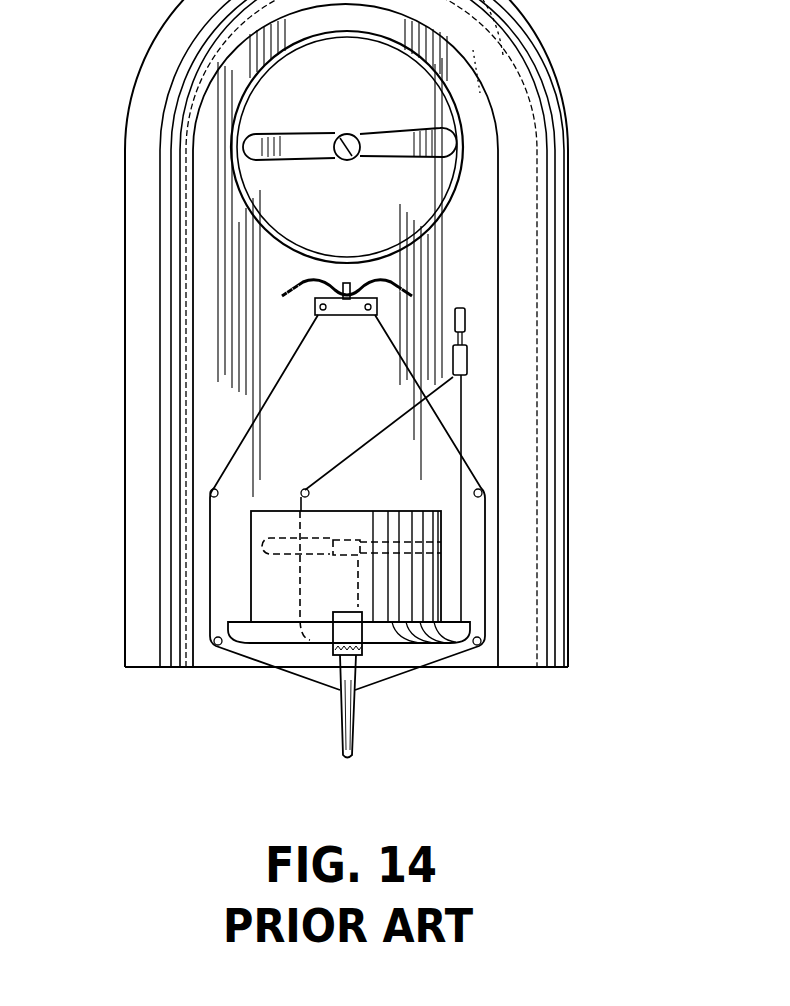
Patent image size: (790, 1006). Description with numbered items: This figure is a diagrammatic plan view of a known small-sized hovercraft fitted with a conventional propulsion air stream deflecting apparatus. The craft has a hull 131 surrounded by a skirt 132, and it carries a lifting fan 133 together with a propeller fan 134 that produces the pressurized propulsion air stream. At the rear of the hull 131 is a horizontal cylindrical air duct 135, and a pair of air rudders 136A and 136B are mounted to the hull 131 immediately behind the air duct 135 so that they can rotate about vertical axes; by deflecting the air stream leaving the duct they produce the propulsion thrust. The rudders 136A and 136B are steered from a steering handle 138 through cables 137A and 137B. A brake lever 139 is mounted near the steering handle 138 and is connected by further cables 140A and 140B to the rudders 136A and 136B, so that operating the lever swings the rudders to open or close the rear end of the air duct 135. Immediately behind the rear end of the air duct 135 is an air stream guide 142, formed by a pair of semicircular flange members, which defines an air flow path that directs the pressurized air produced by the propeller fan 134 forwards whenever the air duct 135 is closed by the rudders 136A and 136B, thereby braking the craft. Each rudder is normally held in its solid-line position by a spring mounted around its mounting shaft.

The hull 131 is at (485, 193).
The skirt 132 is at (135, 178).
The lifting fan 133 is at (378, 135).
The propeller fan 134 is at (272, 535).
The horizontal cylindrical air duct 135 is at (363, 510).
The air rudder 136A is at (358, 728).
The air rudder 136B is at (338, 728).
The cable 137A is at (485, 551).
The cable 137B is at (208, 543).
The steering handle 138 is at (362, 272).
The brake lever 139 is at (466, 340).
The cable 140A is at (463, 417).
The cable 140B is at (383, 427).
The air stream guide 142 is at (410, 640).